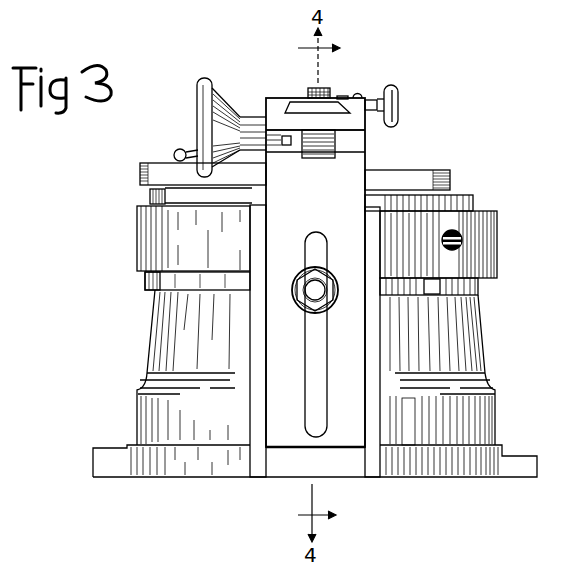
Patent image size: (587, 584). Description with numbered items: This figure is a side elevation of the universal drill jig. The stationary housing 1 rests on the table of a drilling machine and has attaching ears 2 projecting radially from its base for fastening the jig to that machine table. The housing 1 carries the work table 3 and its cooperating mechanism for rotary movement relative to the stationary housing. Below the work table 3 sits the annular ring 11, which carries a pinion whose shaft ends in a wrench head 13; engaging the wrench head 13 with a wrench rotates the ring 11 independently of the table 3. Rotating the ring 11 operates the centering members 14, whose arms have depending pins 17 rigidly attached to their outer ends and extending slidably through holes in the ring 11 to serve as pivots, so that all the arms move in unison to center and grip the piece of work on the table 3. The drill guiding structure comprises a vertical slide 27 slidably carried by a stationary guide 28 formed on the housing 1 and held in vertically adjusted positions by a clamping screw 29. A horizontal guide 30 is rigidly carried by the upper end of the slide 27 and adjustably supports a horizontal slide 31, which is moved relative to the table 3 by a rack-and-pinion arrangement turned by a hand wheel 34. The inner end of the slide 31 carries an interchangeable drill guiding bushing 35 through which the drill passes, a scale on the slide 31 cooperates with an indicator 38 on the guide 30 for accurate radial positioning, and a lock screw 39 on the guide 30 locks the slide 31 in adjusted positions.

The housing 1 is at (468, 352).
The attaching ears 2 is at (108, 465).
The work table 3 is at (456, 195).
The annular ring 11 is at (492, 211).
The wrench head 13 is at (462, 240).
The centering members 14 is at (157, 162).
The depending pins 17 is at (148, 193).
The slide 27 is at (345, 432).
The stationary guide 28 is at (262, 470).
The clamping screw 29 is at (324, 296).
The horizontal guide 30 is at (357, 120).
The horizontal slide 31 is at (302, 106).
The hand wheel 34 is at (222, 110).
The drill guiding bushing 35 is at (331, 93).
The indicator 38 is at (364, 96).
The lock screw 39 is at (399, 104).